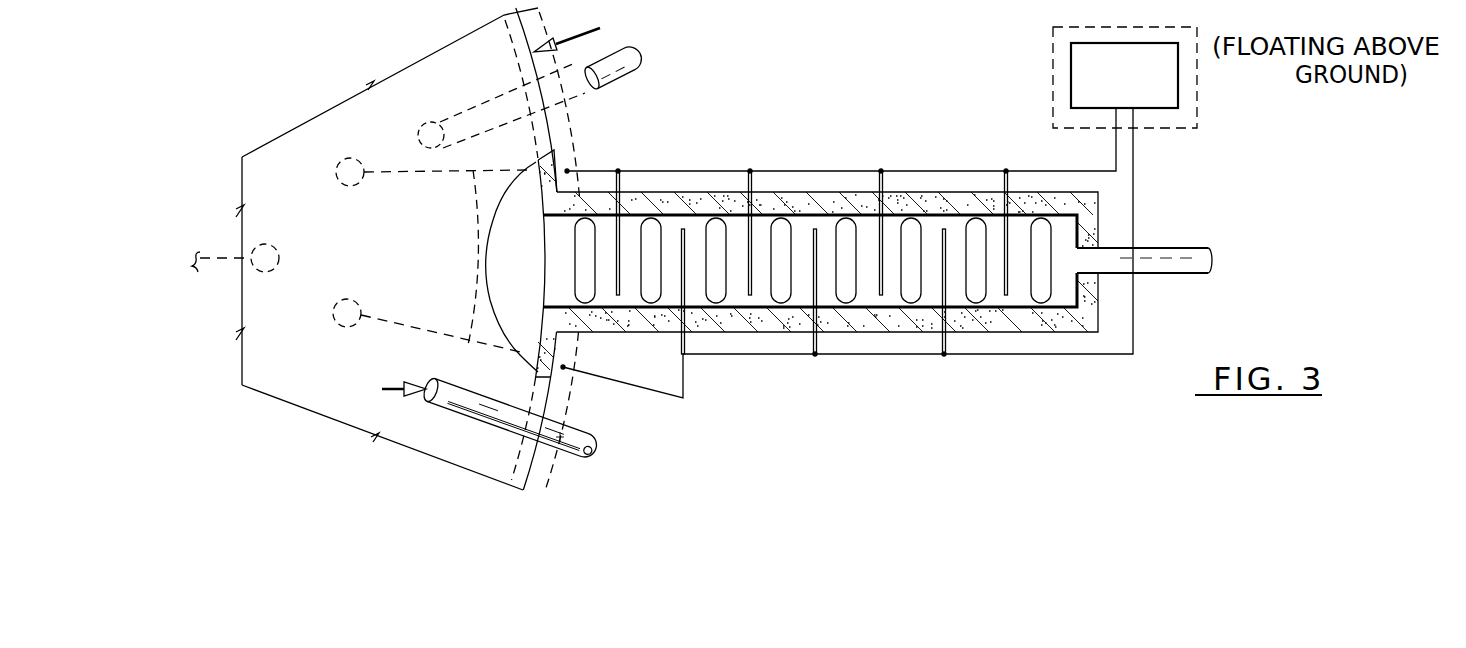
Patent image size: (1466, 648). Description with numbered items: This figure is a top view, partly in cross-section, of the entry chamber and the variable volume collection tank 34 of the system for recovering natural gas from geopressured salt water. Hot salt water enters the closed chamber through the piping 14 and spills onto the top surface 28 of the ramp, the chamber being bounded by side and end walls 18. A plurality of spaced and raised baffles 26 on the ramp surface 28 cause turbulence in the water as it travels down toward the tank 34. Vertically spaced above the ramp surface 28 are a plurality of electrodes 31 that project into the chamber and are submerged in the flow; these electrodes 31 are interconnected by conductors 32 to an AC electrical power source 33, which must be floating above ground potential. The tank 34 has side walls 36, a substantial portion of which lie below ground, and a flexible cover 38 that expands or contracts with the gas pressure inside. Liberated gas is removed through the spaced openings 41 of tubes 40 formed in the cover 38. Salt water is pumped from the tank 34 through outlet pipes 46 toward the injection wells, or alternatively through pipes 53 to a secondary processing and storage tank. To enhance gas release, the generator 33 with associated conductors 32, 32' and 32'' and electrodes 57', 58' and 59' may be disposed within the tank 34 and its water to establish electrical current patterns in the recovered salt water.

The piping 14 is at (1150, 272).
The side and end walls 18 is at (1097, 207).
The baffles 26 is at (838, 240).
The top surface of ramp 28 is at (868, 294).
The electrodes 31 is at (619, 280).
The conductors 32 is at (847, 253).
The conductor 32' is at (484, 267).
The conductor 32'' is at (203, 282).
The AC electrical power source 33 is at (1071, 80).
The variable volume collection tank 34 is at (582, 32).
The side walls 36 is at (509, 56).
The flexible cover 38 is at (323, 128).
The tubes 40 is at (590, 440).
The spaced openings 41 is at (389, 388).
The outlet pipes 46 is at (252, 0).
The pipes 53 is at (572, 95).
The electrode 57' is at (432, 154).
The electrode 58' is at (417, 330).
The electrode 59' is at (260, 250).